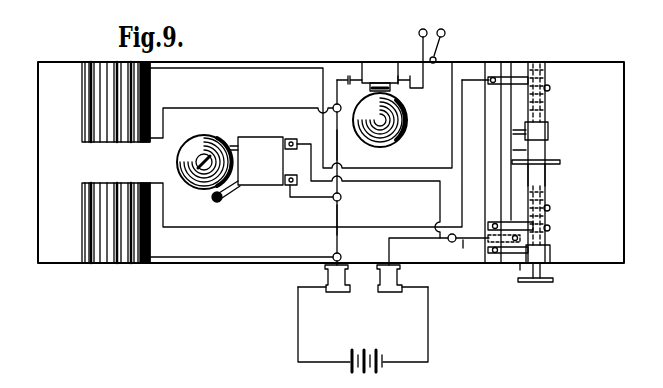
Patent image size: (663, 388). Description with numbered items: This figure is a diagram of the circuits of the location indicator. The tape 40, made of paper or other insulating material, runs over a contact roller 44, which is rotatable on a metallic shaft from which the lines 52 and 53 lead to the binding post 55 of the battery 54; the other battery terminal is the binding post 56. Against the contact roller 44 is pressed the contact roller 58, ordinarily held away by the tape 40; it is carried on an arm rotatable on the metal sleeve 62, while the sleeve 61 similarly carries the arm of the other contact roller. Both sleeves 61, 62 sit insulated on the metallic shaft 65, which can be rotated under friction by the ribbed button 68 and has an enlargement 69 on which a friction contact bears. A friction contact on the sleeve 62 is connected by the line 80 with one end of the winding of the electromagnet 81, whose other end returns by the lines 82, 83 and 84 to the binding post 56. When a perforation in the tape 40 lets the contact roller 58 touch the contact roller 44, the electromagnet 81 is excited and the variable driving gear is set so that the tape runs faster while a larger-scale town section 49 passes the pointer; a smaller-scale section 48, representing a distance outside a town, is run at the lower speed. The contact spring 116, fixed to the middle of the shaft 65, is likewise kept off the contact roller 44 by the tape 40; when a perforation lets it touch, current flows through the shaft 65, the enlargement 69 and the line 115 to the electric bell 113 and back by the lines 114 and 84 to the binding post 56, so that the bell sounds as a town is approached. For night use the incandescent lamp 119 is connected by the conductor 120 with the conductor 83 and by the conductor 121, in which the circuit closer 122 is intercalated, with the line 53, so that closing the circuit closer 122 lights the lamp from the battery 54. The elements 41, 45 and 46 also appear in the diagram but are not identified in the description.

The electromagnet 81 is at (93, 96).
The tape section on smaller scale 48 is at (93, 214).
The conductor 80 is at (190, 68).
The conductor 82 is at (226, 108).
The conductor 120 is at (337, 76).
The incandescent lamp 119 is at (405, 116).
The conductor 121 is at (410, 72).
The circuit closer 122 is at (446, 50).
The contact roller 44 is at (212, 232).
The electric bell 113 is at (267, 161).
The line 114 is at (293, 197).
The line 115 is at (383, 181).
The conductor 83 is at (338, 145).
The conductor 84 is at (338, 205).
The tape section on larger scale 49 is at (200, 257).
The line 53 is at (410, 238).
The line 52 is at (467, 240).
The binding post 56 is at (340, 282).
The binding post 55 is at (393, 283).
The battery 54 is at (384, 362).
The conductor 41 is at (480, 188).
The shaft 46 is at (536, 62).
The sleeve 62 is at (549, 90).
The contact roller 58 is at (522, 133).
The contact spring 116 is at (555, 162).
The metallic shaft 65 is at (548, 175).
The sleeve 61 is at (548, 208).
The contact 45 is at (548, 236).
The enlargement 69 is at (552, 256).
The ribbed button 68 is at (546, 283).
The tape 40 is at (522, 262).